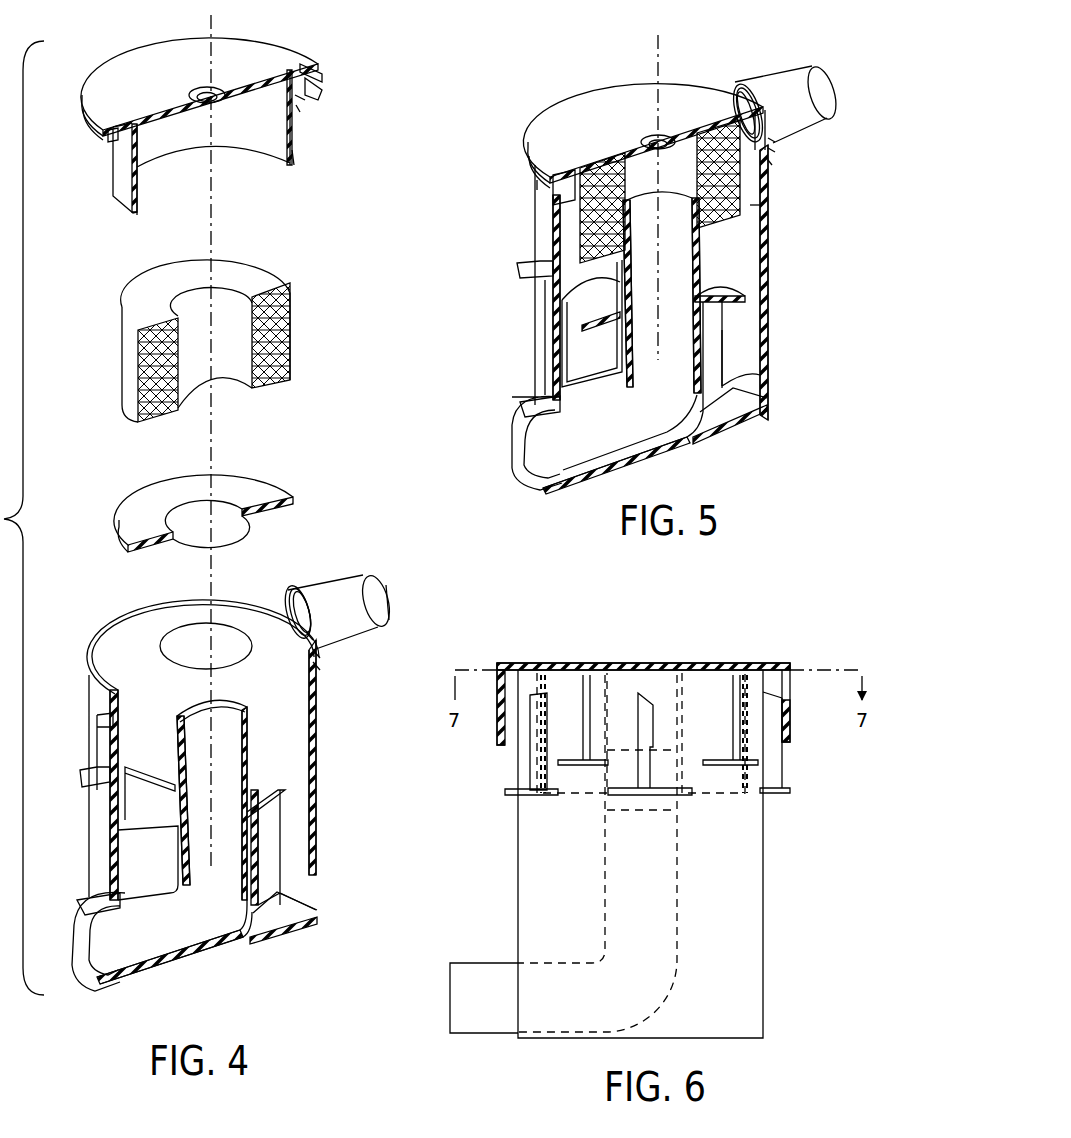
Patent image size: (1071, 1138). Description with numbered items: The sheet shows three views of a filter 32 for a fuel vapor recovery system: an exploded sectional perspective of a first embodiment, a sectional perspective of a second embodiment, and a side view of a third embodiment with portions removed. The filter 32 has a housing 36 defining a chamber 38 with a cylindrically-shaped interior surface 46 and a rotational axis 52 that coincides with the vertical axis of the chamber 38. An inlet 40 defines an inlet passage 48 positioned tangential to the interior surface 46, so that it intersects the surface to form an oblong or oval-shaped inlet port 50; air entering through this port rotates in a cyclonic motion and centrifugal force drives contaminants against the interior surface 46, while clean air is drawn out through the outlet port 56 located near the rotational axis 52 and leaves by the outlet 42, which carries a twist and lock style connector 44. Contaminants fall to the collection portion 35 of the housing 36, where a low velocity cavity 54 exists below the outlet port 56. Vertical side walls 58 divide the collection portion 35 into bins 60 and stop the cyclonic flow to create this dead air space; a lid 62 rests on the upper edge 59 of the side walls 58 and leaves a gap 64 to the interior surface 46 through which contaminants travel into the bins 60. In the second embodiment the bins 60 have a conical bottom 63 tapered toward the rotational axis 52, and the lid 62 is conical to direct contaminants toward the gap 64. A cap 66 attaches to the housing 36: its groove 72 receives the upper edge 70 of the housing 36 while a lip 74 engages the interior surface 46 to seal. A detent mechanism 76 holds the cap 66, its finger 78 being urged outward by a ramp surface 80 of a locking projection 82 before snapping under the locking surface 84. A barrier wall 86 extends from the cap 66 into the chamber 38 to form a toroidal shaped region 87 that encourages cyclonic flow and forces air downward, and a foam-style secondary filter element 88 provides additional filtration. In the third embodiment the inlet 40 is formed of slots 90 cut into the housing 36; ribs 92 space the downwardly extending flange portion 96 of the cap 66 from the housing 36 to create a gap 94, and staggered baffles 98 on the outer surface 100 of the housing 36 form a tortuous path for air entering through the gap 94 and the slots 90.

In FIG. 5, the filter 32 is at (505, 300).
In FIG. 5, the collection portion 35 is at (770, 362).
In FIG. 4, the housing 36 is at (105, 705).
In FIG. 6, the housing 36 is at (640, 854).
In FIG. 4, the chamber 38 is at (203, 647).
In FIG. 4, the inlet 40 is at (334, 592).
In FIG. 5, the inlet 40 is at (783, 72).
In FIG. 6, the inlet 40 is at (587, 685).
In FIG. 4, the outlet 42 is at (92, 990).
In FIG. 5, the outlet 42 is at (520, 462).
In FIG. 6, the outlet 42 is at (484, 998).
In FIG. 4, the twist and lock style connector 44 is at (82, 912).
In FIG. 5, the twist and lock style connector 44 is at (528, 418).
In FIG. 4, the interior surface 46 is at (292, 758).
In FIG. 4, the inlet passage 48 is at (388, 593).
In FIG. 4, the inlet port 50 is at (216, 630).
In FIG. 4, the rotational axis 52 is at (216, 24).
In FIG. 5, the rotational axis 52 is at (664, 48).
In FIG. 4, the low velocity cavity 54 is at (283, 905).
In FIG. 4, the outlet port 56 is at (178, 722).
In FIG. 5, the outlet port 56 is at (650, 220).
In FIG. 4, the vertical side walls 58 is at (140, 852).
In FIG. 5, the vertical side walls 58 is at (718, 357).
In FIG. 4, the upper edge 59 is at (168, 780).
In FIG. 4, the bins 60 is at (158, 797).
In FIG. 5, the bins 60 is at (750, 378).
In FIG. 4, the lid 62 is at (203, 513).
In FIG. 5, the lid 62 is at (720, 292).
In FIG. 5, the conical bottom 63 is at (720, 418).
In FIG. 5, the gap 64 is at (752, 292).
In FIG. 4, the cap 66 is at (199, 126).
In FIG. 5, the cap 66 is at (644, 144).
In FIG. 6, the cap 66 is at (590, 666).
In FIG. 4, the upper edge 70 is at (118, 640).
In FIG. 4, the groove 72 is at (323, 78).
In FIG. 4, the lip 74 is at (117, 155).
In FIG. 4, the detent mechanism 76 is at (298, 120).
In FIG. 4, the finger 78 is at (308, 110).
In FIG. 5, the finger 78 is at (770, 167).
In FIG. 4, the ramp surface 80 is at (320, 645).
In FIG. 5, the ramp surface 80 is at (773, 143).
In FIG. 4, the locking projection 82 is at (320, 656).
In FIG. 5, the locking projection 82 is at (770, 153).
In FIG. 4, the locking surface 84 is at (322, 668).
In FIG. 4, the barrier wall 86 is at (294, 165).
In FIG. 5, the toroidal shaped region 87 is at (752, 207).
In FIG. 4, the secondary filter element 88 is at (290, 292).
In FIG. 5, the secondary filter element 88 is at (580, 222).
In FIG. 6, the slots 90 is at (588, 712).
In FIG. 6, the ribs 92 is at (530, 758).
In FIG. 6, the gap 94 is at (770, 745).
In FIG. 6, the flange portion 96 is at (786, 728).
In FIG. 6, the baffles 98 is at (572, 765).
In FIG. 6, the outer surface 100 is at (632, 852).